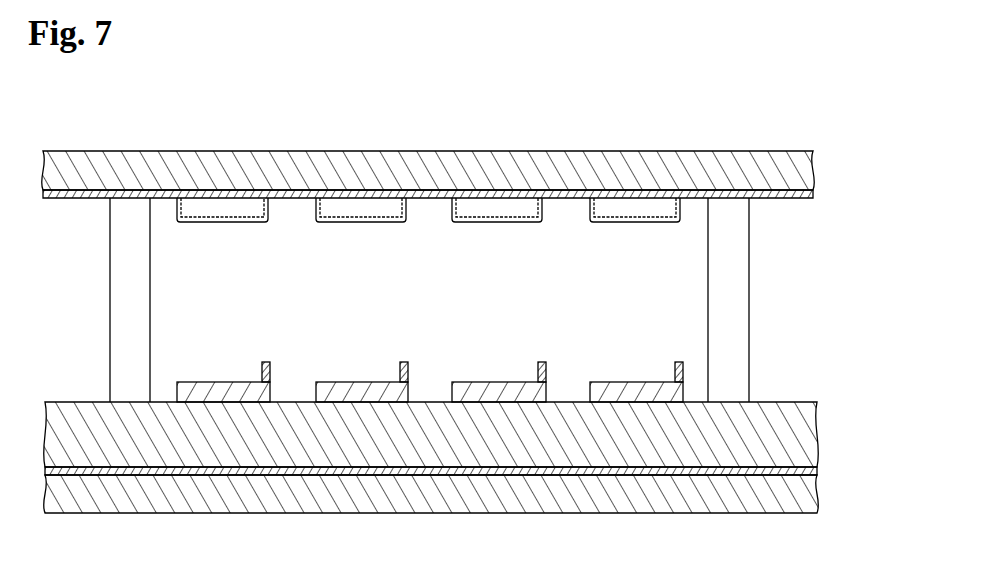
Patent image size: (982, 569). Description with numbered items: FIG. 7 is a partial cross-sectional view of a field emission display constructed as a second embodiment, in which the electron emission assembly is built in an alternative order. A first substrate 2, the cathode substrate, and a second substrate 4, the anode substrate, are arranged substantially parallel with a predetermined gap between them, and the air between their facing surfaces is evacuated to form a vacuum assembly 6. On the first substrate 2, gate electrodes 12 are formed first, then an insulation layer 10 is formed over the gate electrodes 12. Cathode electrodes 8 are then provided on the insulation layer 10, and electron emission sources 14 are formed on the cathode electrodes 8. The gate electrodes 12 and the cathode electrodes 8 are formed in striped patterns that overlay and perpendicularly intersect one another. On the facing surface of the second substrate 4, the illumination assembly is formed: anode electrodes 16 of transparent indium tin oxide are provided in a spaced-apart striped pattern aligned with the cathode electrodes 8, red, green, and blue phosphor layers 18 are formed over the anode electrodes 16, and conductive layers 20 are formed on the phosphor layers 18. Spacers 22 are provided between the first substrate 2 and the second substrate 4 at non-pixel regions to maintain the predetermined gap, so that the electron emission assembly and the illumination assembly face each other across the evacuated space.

The first substrate 2 is at (444, 494).
The second substrate 4 is at (428, 156).
The vacuum assembly 6 is at (680, 109).
The cathode electrodes 8 is at (230, 393).
The insulation layer 10 is at (449, 434).
The gate electrodes 12 is at (449, 463).
The electron emission sources 14 is at (270, 372).
The anode electrodes 16 is at (233, 207).
The phosphor layers 18 is at (181, 210).
The conductive layers 20 is at (266, 219).
The spacers 22 is at (428, 300).